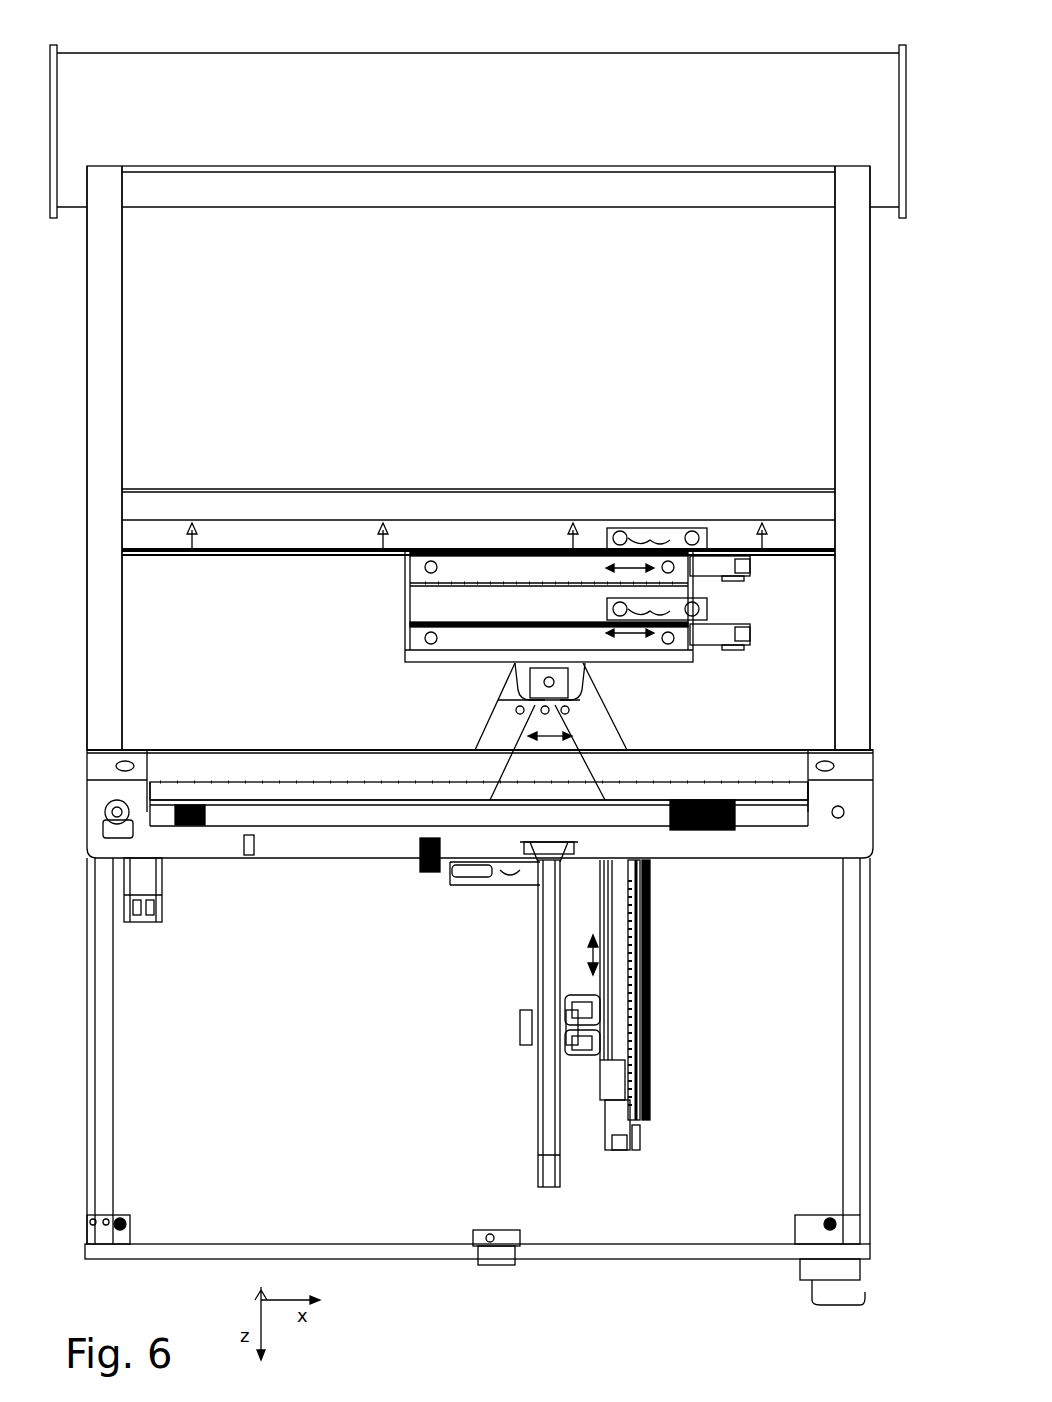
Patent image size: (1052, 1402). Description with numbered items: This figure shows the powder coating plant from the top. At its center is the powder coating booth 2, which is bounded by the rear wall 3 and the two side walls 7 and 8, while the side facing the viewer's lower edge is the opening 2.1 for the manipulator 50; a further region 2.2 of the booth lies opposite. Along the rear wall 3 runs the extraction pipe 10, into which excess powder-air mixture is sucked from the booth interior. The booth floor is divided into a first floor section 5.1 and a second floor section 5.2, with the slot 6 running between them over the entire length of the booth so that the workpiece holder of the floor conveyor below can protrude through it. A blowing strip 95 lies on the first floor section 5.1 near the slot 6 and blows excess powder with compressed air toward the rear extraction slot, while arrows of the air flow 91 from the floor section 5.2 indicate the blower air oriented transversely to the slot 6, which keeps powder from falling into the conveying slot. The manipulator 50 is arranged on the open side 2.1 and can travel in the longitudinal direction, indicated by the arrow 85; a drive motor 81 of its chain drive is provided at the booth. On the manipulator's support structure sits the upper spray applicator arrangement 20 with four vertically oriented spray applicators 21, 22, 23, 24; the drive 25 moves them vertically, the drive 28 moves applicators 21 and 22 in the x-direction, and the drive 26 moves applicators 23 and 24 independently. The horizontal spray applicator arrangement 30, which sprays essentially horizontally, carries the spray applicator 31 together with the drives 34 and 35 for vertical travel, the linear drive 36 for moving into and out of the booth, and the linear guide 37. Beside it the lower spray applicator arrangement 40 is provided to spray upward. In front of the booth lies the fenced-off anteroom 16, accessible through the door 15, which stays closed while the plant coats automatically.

The extraction pipe 10 is at (253, 53).
The powder coating booth 2 is at (908, 305).
The opening for a manipulator 2.1 is at (230, 742).
The upper magazine part 2.2 is at (353, 243).
The rear wall 3 is at (533, 166).
The first floor section 5.1 is at (478, 454).
The second floor section 5.2 is at (478, 608).
The slot 6 is at (448, 543).
The side wall 7 is at (87, 362).
The side wall 8 is at (872, 380).
The door 15 is at (610, 1258).
The anteroom 16 is at (402, 1218).
The upper spray applicator arrangement 20 is at (637, 688).
The spray applicator 21 is at (625, 530).
The spray applicator 22 is at (695, 530).
The spray applicator 23 is at (605, 600).
The spray applicator 24 is at (702, 606).
The drive 25 is at (520, 680).
The drive 26 is at (752, 632).
The drive 28 is at (752, 566).
The horizontal spray applicator arrangement 30 is at (655, 1082).
The spray applicator 31 is at (540, 890).
The drive 34 is at (590, 1058).
The drive 35 is at (605, 1005).
The linear drive 36 is at (620, 1150).
The linear guide 37 is at (600, 945).
The lower spray applicator arrangement 40 is at (512, 968).
The manipulator 50 is at (712, 880).
The drive motor 81 is at (142, 922).
The direction of movement 85 is at (528, 722).
The air flow 91 is at (383, 555).
The blowing strip 95 is at (540, 497).